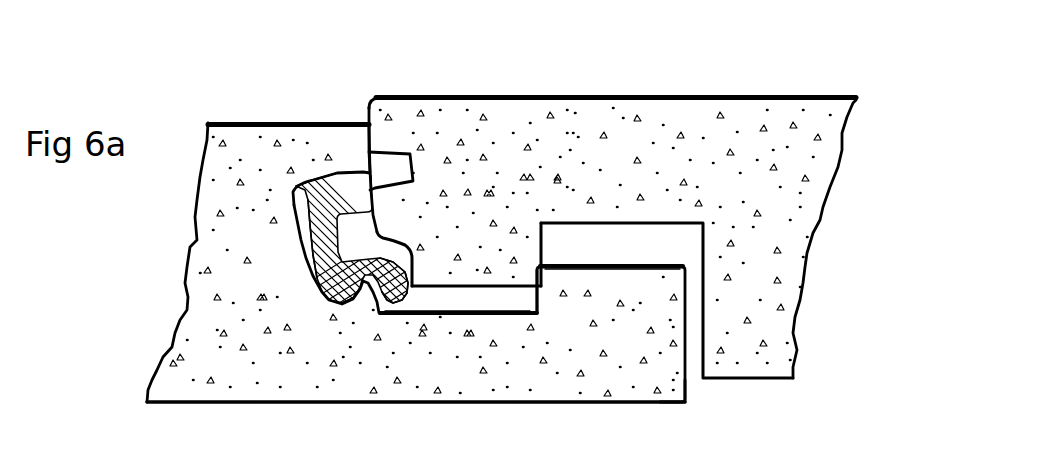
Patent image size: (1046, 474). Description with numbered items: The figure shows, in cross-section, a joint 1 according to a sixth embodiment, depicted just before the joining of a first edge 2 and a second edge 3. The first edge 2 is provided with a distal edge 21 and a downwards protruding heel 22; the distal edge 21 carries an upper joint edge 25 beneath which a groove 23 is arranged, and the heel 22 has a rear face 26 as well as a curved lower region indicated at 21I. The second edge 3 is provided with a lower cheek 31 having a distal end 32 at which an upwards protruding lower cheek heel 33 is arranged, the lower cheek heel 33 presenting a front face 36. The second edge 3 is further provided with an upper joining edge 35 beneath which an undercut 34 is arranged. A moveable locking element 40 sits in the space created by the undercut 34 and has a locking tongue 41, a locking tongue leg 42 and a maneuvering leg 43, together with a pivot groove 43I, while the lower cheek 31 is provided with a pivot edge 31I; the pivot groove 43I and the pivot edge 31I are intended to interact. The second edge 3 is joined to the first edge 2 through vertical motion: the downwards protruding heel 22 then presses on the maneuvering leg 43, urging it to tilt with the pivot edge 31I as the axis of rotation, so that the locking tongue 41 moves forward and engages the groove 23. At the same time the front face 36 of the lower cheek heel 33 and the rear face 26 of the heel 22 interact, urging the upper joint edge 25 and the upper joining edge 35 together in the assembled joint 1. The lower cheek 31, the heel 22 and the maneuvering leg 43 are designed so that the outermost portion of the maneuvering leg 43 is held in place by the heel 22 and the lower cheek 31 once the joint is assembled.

The joint 1 is at (360, 46).
The first edge 2 is at (497, 133).
The second edge 3 is at (240, 147).
The distal edge 21 is at (378, 95).
The curved lower edge of first element 21I is at (407, 243).
The downwards protruding heel 22 is at (466, 258).
The groove 23 is at (393, 173).
The upper joint edge 25 is at (366, 114).
The rear face 26 is at (555, 245).
The lower cheek 31 is at (426, 361).
The pivot edge 31I is at (375, 283).
The distal end 32 is at (683, 391).
The lower cheek heel 33 is at (595, 290).
The undercut 34 is at (292, 200).
The upper joining edge 35 is at (362, 157).
The front face 36 is at (533, 300).
The moveable locking element 40 is at (330, 282).
The locking tongue 41 is at (317, 185).
The locking tongue leg 42 is at (299, 252).
The maneuvering leg 43 is at (392, 292).
The pivot groove 43I is at (340, 288).